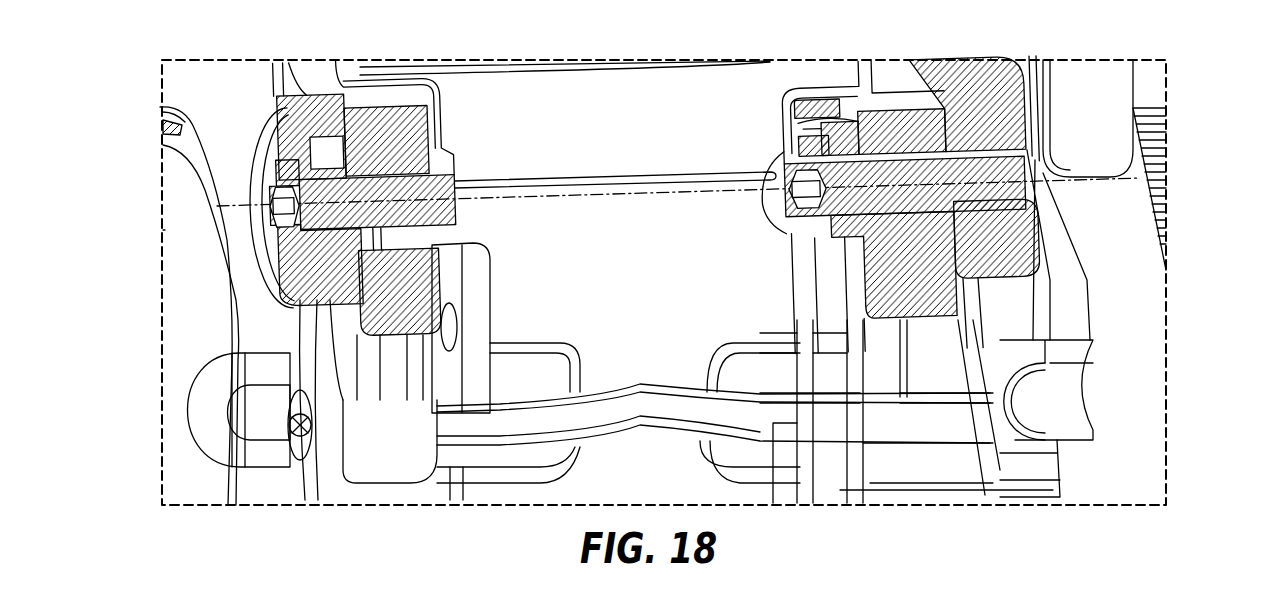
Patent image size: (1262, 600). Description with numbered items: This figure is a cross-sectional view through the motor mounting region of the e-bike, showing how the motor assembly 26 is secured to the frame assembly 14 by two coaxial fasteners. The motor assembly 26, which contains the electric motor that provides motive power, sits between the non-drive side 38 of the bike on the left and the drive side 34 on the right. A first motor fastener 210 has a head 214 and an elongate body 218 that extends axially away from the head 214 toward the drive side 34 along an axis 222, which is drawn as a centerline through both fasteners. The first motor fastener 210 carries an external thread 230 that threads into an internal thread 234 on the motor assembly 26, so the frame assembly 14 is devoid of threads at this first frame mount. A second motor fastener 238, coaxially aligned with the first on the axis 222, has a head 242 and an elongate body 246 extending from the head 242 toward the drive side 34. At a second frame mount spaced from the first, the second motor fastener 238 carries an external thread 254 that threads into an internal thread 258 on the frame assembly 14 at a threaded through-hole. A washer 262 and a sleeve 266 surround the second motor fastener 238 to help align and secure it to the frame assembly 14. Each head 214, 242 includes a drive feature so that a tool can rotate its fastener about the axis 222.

The frame assembly 14 is at (278, 58).
The motor assembly 26 is at (416, 283).
The drive side 34 is at (1180, 149).
The non-drive side 38 is at (182, 273).
The first motor fastener 210 is at (272, 168).
The head 214 is at (265, 168).
The elongate body 218 is at (334, 192).
The axis 222 is at (560, 198).
The external thread 230 is at (413, 105).
The internal thread 234 is at (460, 180).
The second motor fastener 238 is at (787, 153).
The head 242 is at (790, 210).
The elongate body 246 is at (924, 178).
The external thread 254 is at (1020, 123).
The internal thread 258 is at (1000, 180).
The washer 262 is at (790, 148).
The sleeve 266 is at (907, 147).